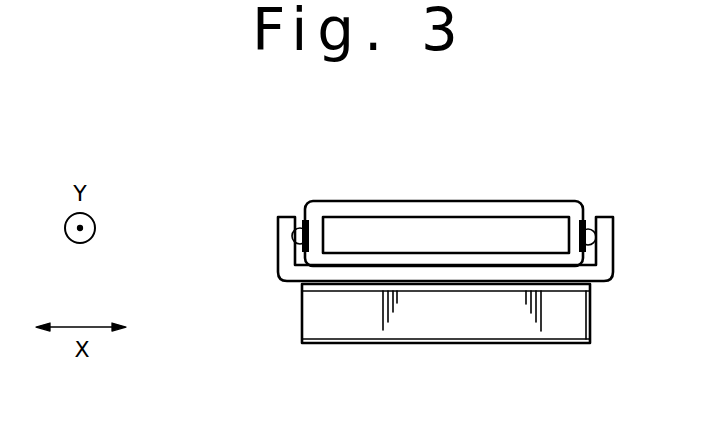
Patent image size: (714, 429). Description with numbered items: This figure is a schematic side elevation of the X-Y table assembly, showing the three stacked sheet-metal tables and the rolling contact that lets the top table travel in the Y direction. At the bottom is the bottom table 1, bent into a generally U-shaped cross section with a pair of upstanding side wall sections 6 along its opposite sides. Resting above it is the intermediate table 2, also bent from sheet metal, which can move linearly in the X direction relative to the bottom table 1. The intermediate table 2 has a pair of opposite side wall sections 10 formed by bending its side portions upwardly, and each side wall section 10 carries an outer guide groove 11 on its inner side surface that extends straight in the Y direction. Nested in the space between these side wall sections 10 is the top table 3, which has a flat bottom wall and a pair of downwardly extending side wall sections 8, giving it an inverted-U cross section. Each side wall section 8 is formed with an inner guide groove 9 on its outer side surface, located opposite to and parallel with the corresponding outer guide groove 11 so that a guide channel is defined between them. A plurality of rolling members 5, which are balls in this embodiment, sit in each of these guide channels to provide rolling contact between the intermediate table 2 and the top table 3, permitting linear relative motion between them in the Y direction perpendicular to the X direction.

The bottom table 1 is at (512, 330).
The intermediate table 2 is at (602, 278).
The top table 3 is at (437, 206).
The rolling members 5 is at (303, 228).
The side wall sections 6 is at (452, 325).
The side wall sections 8 is at (323, 238).
The inner guide groove 9 is at (293, 240).
The side wall sections 10 is at (278, 226).
The outer guide groove 11 is at (309, 229).